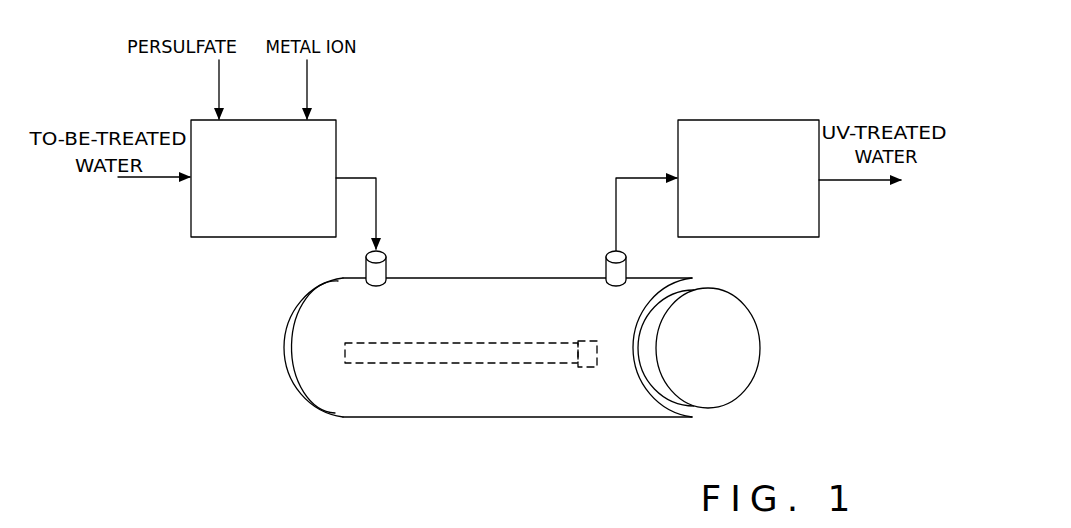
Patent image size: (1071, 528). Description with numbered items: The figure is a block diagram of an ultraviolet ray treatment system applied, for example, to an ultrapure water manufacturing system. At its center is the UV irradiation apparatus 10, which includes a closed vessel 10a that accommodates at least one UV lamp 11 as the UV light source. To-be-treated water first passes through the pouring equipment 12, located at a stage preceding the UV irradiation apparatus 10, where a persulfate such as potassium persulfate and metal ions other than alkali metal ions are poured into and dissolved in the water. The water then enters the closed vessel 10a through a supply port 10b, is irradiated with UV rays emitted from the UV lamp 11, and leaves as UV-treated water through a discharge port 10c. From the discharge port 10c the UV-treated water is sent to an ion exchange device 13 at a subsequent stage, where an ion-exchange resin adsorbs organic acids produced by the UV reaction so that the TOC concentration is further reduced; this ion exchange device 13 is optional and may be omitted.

The UV irradiation apparatus 10 is at (484, 344).
The closed vessel 10a is at (458, 279).
The supply port 10b is at (387, 258).
The discharge port 10c is at (627, 257).
The UV lamp 11 is at (453, 343).
The pouring equipment 12 is at (336, 155).
The ion exchange device 13 is at (678, 150).